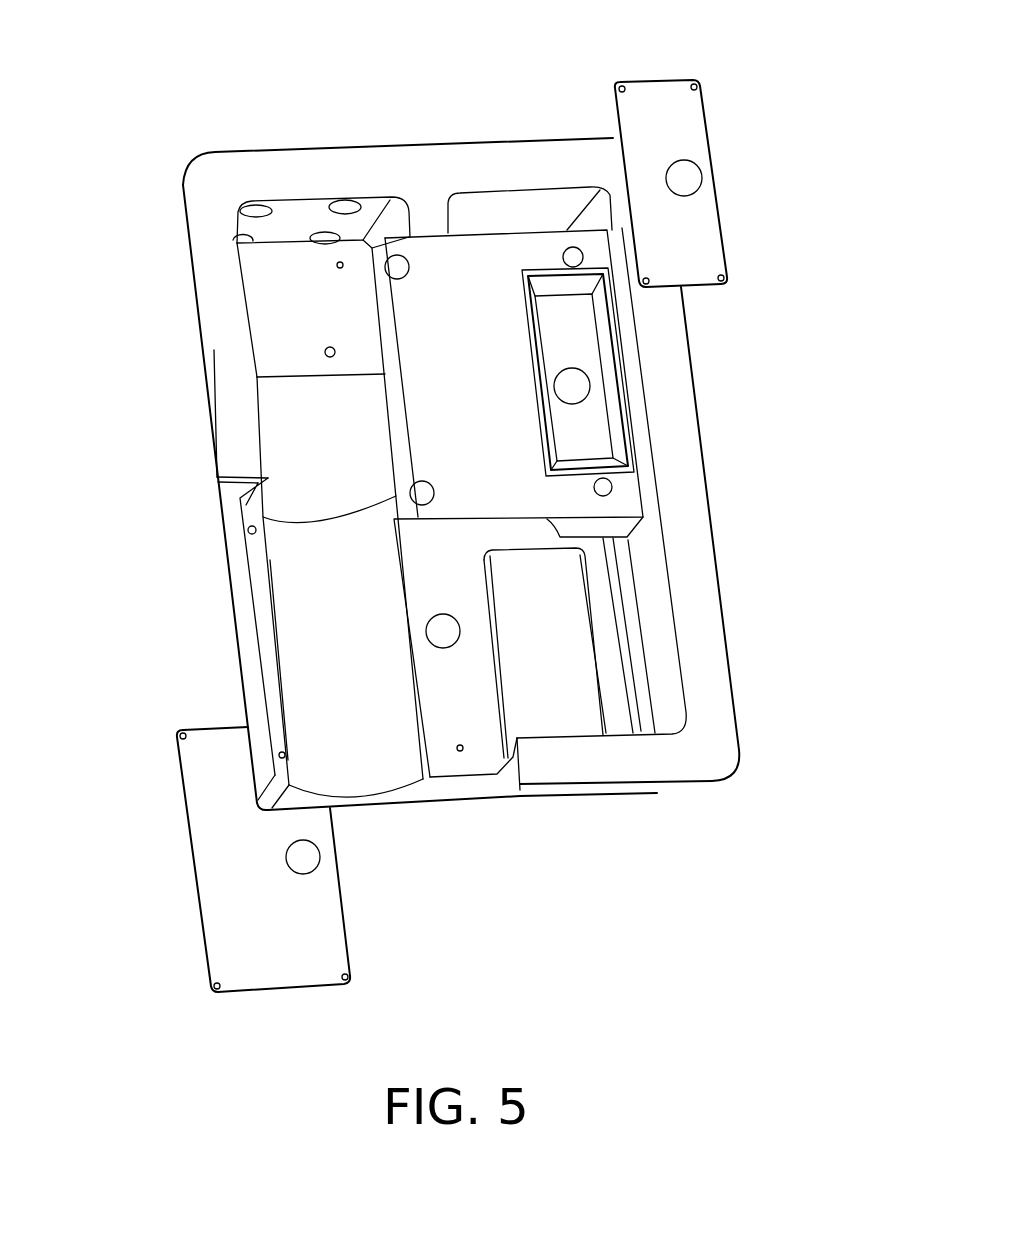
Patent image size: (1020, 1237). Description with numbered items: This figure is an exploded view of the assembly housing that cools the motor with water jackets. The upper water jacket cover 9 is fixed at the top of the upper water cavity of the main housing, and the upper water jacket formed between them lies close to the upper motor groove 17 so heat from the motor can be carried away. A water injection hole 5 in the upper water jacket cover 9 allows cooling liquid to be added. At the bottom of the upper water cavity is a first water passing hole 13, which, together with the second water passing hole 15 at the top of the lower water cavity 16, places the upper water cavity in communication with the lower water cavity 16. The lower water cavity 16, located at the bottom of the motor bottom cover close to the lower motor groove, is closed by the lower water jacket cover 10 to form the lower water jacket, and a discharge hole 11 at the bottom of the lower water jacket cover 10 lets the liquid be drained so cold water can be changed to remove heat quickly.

The water injection hole 5 is at (326, 861).
The upper water jacket cover 9 is at (208, 826).
The lower water jacket cover 10 is at (663, 118).
The discharge hole 11 is at (690, 180).
The first water passing hole 13 is at (464, 627).
The second water passing hole 15 is at (590, 392).
The lower water cavity 16 is at (590, 345).
The upper motor groove 17 is at (300, 588).